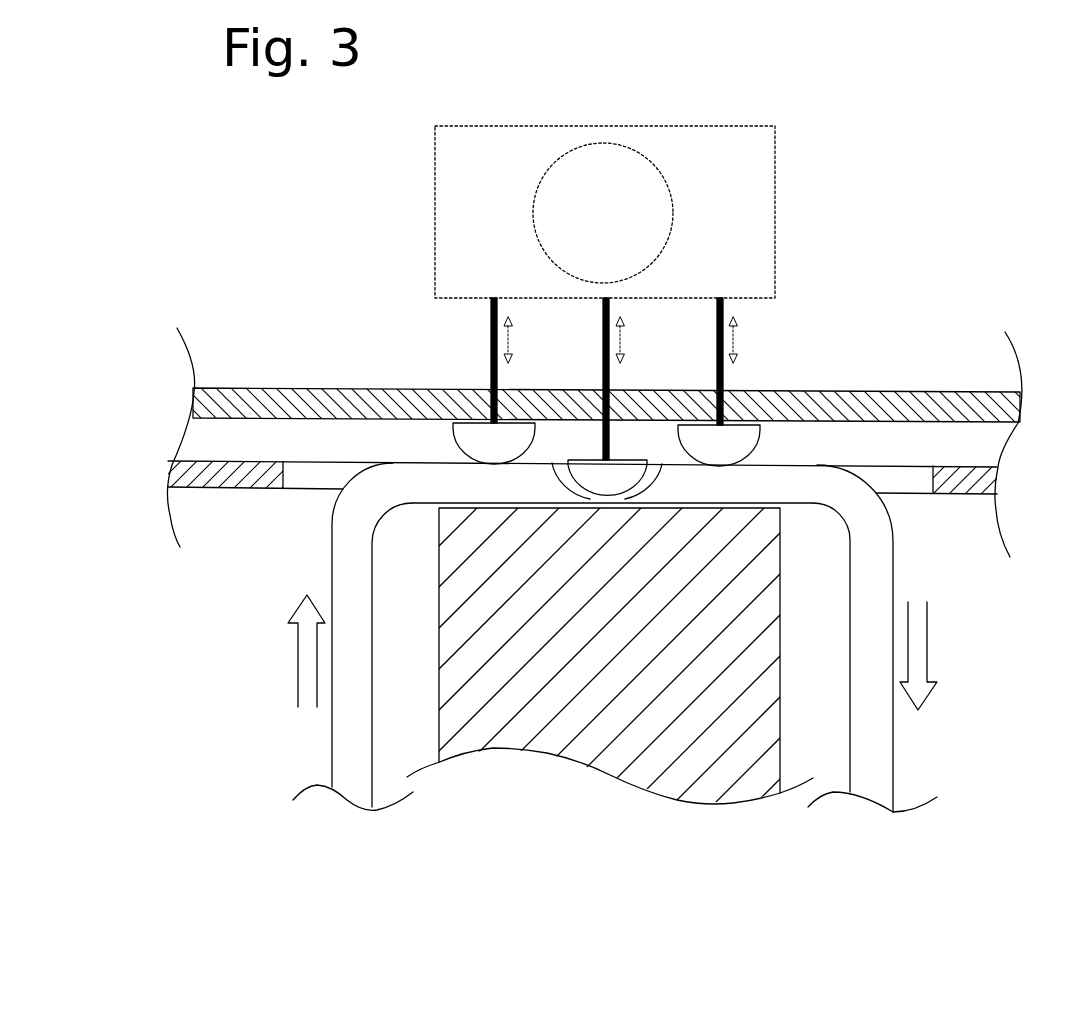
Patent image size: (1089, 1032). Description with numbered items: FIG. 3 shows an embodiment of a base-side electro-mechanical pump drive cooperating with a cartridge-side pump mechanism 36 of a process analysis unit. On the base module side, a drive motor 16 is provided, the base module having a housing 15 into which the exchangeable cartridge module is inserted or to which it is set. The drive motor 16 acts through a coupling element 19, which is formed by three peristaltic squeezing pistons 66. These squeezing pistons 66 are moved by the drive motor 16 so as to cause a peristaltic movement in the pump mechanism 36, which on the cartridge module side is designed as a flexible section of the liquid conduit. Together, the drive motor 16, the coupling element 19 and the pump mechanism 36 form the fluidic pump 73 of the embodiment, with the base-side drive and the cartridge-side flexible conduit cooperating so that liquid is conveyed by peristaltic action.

The fluidic pump 73 is at (862, 154).
The drive motor 16 is at (737, 285).
The housing 15 is at (1019, 391).
The coupling element 19 is at (412, 355).
The pump mechanism 36 is at (412, 518).
The peristaltic squeezing pistons 66 is at (723, 437).